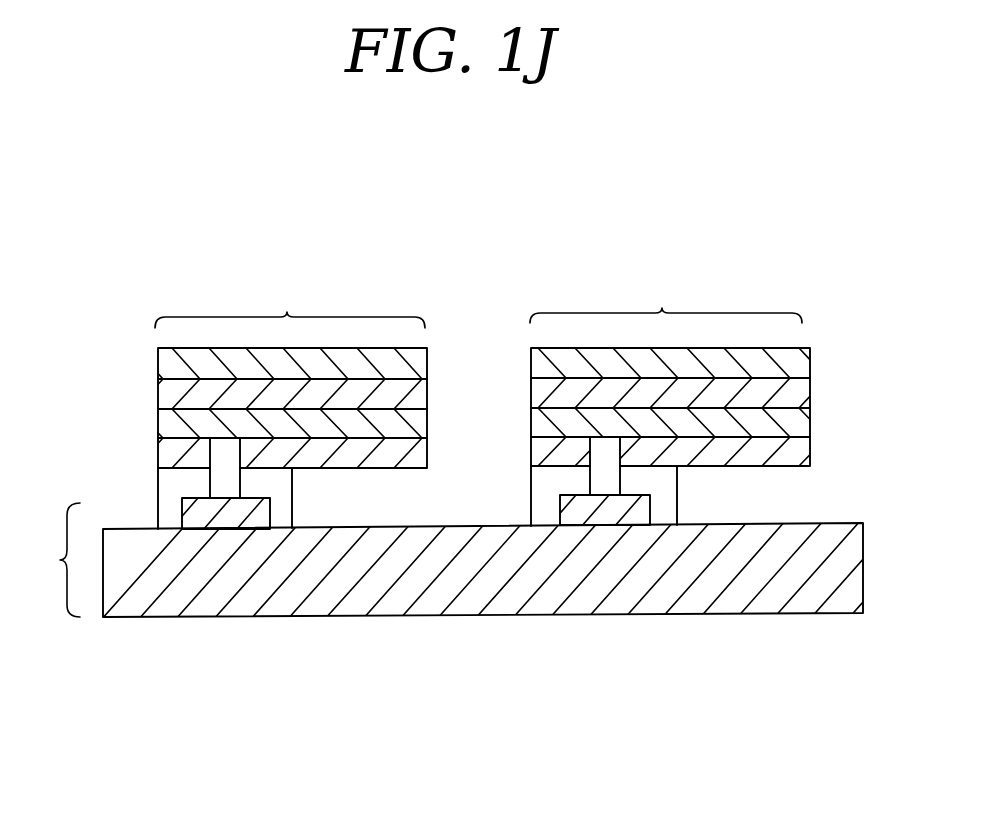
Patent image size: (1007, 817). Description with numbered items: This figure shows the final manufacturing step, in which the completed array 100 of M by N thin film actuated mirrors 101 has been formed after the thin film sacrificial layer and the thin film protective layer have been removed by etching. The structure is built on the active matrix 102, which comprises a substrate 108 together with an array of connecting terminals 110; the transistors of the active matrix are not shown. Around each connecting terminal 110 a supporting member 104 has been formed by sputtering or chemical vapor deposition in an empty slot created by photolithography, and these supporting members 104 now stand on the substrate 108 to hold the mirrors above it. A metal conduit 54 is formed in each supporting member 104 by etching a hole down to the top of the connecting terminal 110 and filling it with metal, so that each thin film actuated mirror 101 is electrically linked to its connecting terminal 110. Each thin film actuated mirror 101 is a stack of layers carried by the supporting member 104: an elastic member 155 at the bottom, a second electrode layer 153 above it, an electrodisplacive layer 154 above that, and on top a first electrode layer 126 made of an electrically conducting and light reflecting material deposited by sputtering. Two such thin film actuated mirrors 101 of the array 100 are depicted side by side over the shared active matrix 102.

The array of thin film actuated mirrors 100 is at (543, 277).
The thin film actuated mirror 101 is at (478, 299).
The active matrix 102 is at (61, 563).
The supporting member 104 is at (277, 502).
The substrate 108 is at (410, 590).
The connecting terminal 110 is at (198, 513).
The first electrode layer 126 is at (178, 367).
The second electrode layer 153 is at (177, 427).
The electrodisplacive layer 154 is at (170, 402).
The elastic member 155 is at (173, 462).
The conduit 54 is at (212, 460).